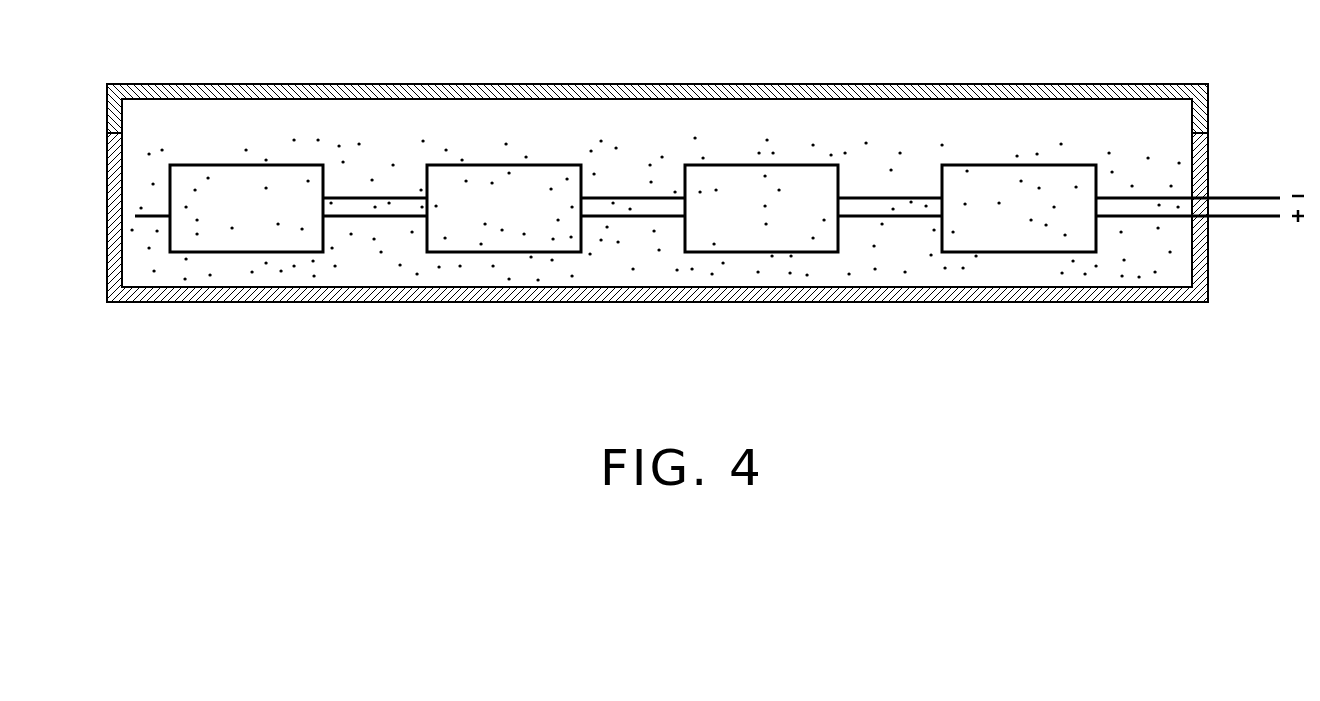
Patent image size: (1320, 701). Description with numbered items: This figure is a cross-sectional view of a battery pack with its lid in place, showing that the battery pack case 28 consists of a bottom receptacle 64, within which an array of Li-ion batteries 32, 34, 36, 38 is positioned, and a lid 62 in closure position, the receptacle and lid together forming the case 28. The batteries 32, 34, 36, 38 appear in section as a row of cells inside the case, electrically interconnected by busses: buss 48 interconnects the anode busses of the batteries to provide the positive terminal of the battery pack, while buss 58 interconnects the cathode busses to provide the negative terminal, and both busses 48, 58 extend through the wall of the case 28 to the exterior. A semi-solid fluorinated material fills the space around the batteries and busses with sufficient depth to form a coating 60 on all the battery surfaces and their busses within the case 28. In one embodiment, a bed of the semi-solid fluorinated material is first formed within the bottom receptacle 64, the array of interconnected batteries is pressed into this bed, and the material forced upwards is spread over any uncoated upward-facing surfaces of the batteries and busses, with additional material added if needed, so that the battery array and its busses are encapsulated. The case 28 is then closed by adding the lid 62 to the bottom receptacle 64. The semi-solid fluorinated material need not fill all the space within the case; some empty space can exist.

The battery pack case 28 is at (1160, 47).
The Li-ion battery 32 is at (1025, 253).
The Li-ion battery 34 is at (757, 253).
The Li-ion battery 36 is at (512, 253).
The Li-ion battery 38 is at (229, 253).
The buss 48 is at (620, 213).
The buss 58 is at (658, 197).
The coating 60 is at (150, 270).
The lid 62 is at (1210, 112).
The bottom receptacle 64 is at (1210, 262).